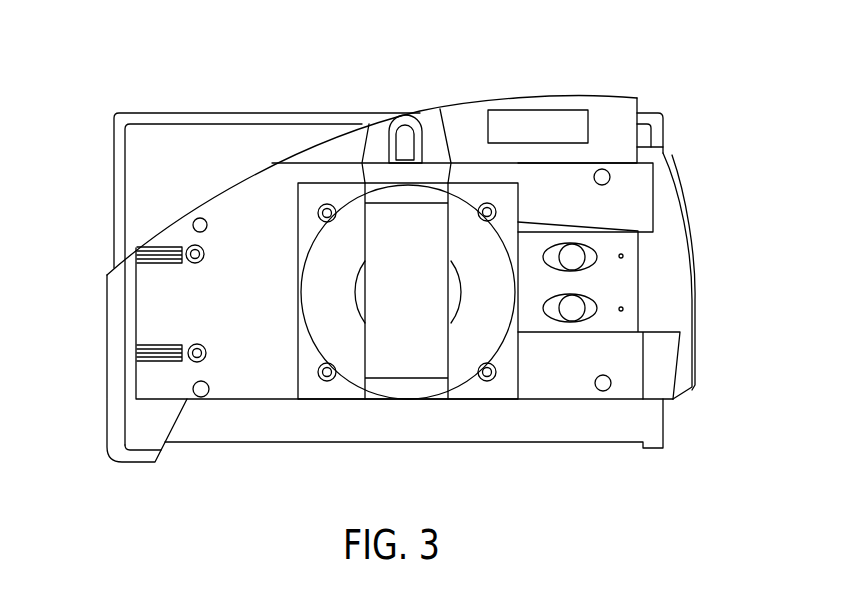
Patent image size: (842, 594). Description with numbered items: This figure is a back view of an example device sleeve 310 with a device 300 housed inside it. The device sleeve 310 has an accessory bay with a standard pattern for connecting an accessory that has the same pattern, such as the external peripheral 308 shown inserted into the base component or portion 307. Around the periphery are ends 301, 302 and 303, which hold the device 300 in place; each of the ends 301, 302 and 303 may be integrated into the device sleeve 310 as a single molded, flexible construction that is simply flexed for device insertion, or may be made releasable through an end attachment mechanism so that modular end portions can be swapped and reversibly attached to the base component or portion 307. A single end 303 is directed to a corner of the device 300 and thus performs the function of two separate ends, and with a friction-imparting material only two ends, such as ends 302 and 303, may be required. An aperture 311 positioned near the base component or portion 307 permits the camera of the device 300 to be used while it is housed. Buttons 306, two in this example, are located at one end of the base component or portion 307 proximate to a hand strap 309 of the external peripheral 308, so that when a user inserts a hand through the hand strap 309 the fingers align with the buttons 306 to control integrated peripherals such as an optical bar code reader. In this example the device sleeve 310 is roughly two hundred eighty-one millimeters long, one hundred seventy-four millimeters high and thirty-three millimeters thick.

The device 300 is at (198, 148).
The end 301 is at (567, 105).
The end 302 is at (675, 223).
The end 303 is at (140, 423).
The buttons 306 is at (572, 259).
The base component or portion 307 is at (244, 358).
The external peripheral 308 is at (495, 307).
The hand strap 309 is at (395, 350).
The device sleeve 310 is at (602, 88).
The aperture 311 is at (405, 138).